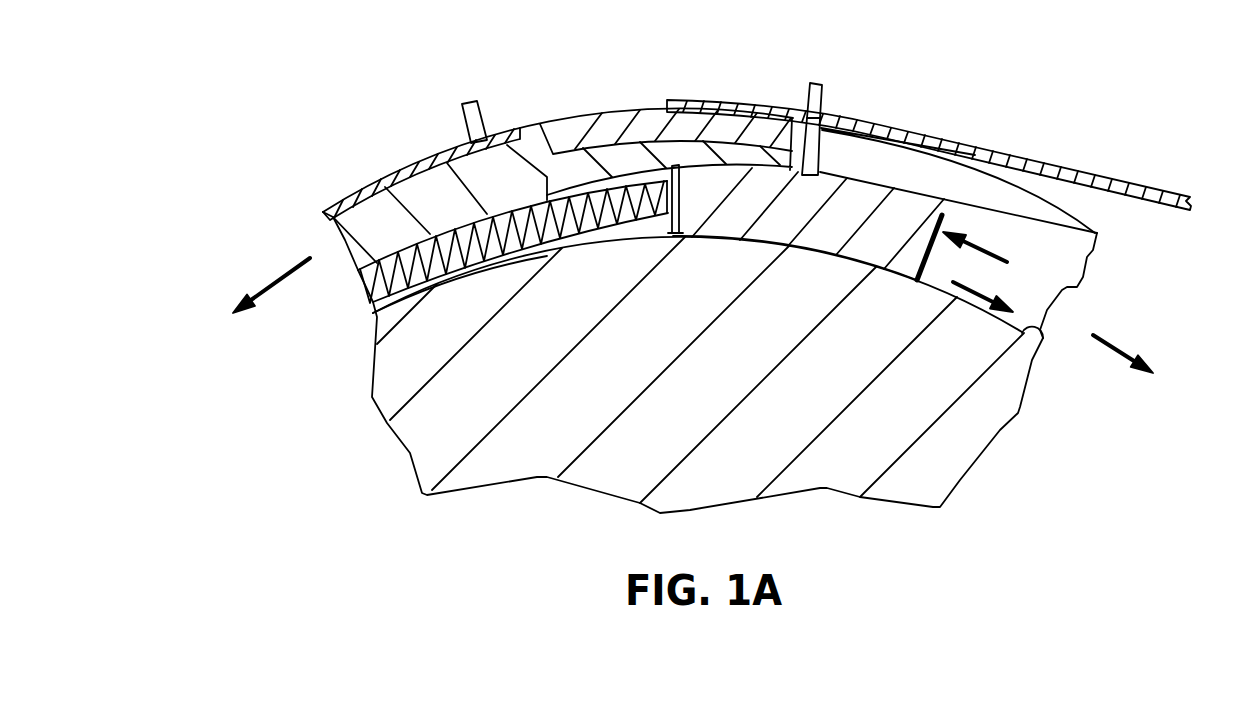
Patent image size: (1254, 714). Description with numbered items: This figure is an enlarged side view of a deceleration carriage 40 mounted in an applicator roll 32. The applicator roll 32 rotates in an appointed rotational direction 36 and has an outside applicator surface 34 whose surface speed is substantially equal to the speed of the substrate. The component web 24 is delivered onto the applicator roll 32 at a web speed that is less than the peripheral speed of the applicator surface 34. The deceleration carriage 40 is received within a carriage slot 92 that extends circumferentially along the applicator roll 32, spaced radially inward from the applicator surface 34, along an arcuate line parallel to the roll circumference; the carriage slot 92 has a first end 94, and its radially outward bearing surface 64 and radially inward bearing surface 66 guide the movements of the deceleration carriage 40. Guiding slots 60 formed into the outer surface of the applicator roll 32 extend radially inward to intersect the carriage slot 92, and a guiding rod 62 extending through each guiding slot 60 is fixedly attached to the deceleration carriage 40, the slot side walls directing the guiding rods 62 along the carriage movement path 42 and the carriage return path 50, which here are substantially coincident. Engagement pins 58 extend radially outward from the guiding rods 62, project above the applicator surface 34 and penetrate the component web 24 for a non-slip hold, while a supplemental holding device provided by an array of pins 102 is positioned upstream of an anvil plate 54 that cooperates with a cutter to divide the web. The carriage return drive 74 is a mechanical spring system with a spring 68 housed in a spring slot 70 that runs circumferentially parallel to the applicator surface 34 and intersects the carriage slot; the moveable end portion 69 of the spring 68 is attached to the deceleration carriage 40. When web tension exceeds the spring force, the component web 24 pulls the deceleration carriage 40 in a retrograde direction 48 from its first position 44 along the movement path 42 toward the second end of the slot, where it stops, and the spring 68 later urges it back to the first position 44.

The component web 24 is at (1173, 190).
The applicator roll 32 is at (603, 394).
The applicator surface 34 is at (1093, 233).
The rotational direction 36 is at (292, 272).
The deceleration carriage 40 is at (873, 257).
The carriage movement path 42 is at (972, 297).
The first position 44 is at (797, 247).
The retrograde direction 48 is at (1105, 345).
The carriage return path 50 is at (993, 238).
The anvil plate 54 is at (603, 113).
The engagement pins 58 is at (812, 83).
The guiding slot 60 is at (958, 180).
The guiding rod 62 is at (813, 152).
The radially outward bearing surface 64 is at (1067, 302).
The radially inward bearing surface 66 is at (1043, 338).
The spring 68 is at (463, 247).
The moveable end portion 69 is at (660, 218).
The spring slot 70 is at (483, 213).
The carriage return drive 74 is at (558, 225).
The carriage slot 92 is at (1042, 270).
The first end 94 is at (677, 233).
The array of pins 102 is at (460, 112).